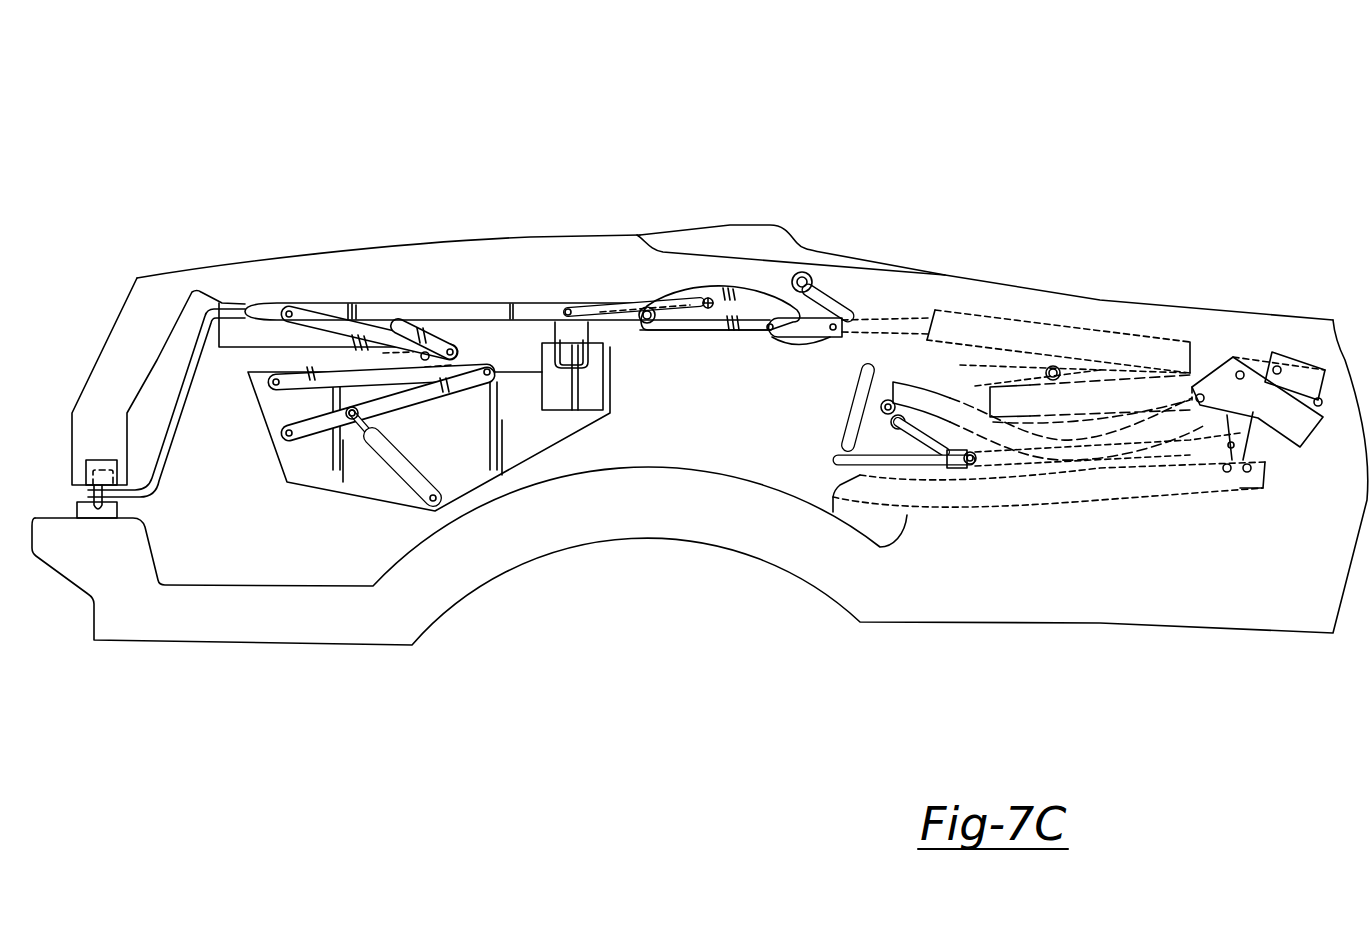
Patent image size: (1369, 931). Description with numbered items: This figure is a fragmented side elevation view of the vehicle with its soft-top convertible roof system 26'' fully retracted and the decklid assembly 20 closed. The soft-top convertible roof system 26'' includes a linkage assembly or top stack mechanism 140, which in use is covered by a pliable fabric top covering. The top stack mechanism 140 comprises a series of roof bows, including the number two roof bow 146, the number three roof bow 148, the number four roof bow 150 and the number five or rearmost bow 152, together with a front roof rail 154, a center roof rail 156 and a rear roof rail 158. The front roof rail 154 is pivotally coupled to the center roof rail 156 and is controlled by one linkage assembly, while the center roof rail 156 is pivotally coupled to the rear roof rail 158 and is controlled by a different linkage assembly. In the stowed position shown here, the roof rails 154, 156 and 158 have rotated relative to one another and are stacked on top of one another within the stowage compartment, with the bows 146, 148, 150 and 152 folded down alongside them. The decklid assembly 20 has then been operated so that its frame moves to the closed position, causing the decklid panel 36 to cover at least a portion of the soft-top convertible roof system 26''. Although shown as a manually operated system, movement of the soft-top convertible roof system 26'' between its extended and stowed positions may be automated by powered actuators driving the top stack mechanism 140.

The decklid assembly 20 is at (575, 138).
The decklid panel 36 is at (415, 241).
The soft-top convertible roof system 26'' is at (593, 228).
The top stack mechanism 140 is at (1134, 212).
The number two roof bow 146 is at (840, 400).
The number three roof bow 148 is at (837, 453).
The number four roof bow 150 is at (1188, 450).
The rearmost bow 152 is at (833, 490).
The front roof rail 154 is at (1125, 350).
The center roof rail 156 is at (1040, 395).
The rear roof rail 158 is at (1045, 440).